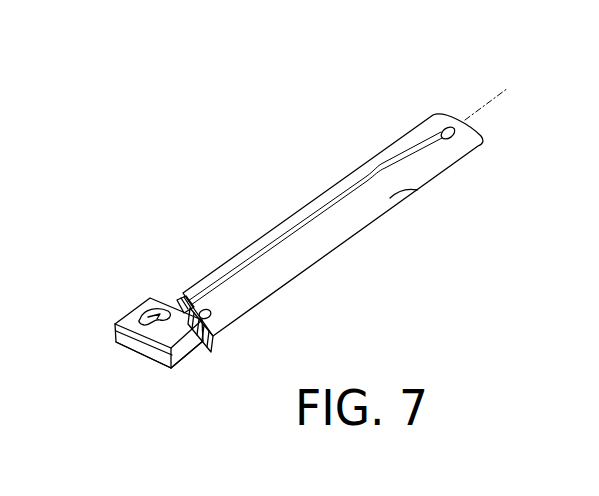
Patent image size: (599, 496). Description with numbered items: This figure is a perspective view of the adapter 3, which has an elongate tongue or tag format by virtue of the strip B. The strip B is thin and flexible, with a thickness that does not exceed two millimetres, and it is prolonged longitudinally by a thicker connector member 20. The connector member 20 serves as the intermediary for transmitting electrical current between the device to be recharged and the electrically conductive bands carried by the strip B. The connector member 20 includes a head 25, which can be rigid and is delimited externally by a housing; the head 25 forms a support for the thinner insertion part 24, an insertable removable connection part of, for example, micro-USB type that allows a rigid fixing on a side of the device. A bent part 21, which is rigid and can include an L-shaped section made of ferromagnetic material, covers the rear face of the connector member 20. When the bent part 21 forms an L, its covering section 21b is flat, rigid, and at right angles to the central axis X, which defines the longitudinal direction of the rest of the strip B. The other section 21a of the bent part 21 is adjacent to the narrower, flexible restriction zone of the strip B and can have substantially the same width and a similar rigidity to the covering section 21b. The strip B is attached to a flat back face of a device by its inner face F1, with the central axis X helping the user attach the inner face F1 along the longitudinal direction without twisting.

The adapter 3 is at (313, 308).
The connector member 20 is at (143, 318).
The bent part 21 is at (142, 343).
The other section 21a is at (178, 368).
The covering section 21b is at (122, 337).
The insertion part 24 is at (178, 302).
The head 25 is at (197, 353).
The strip B is at (345, 177).
The central axis X is at (480, 104).
The inner face F1 is at (417, 190).